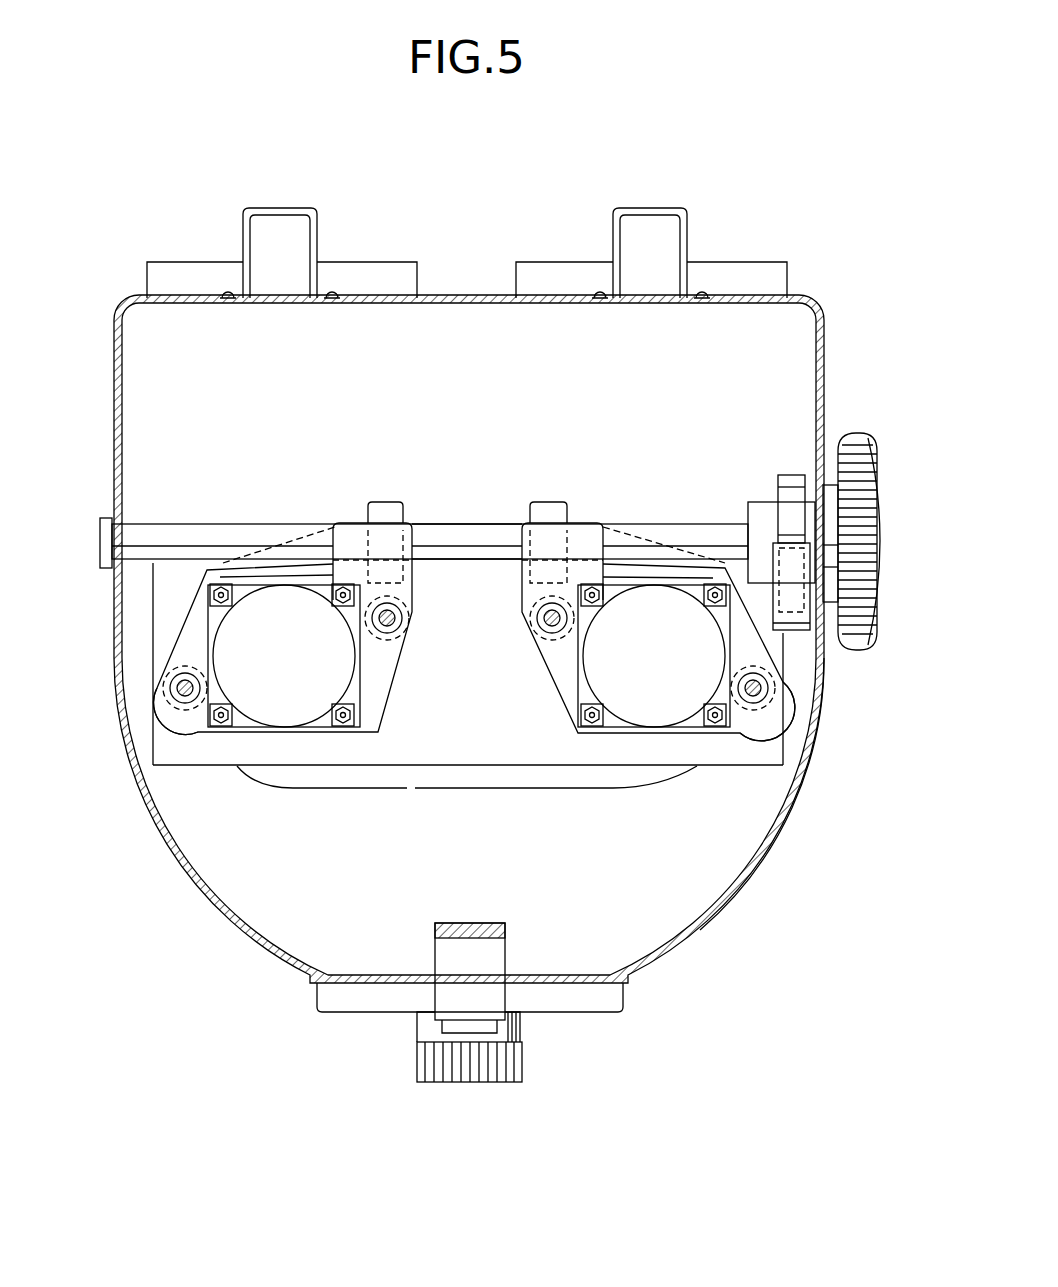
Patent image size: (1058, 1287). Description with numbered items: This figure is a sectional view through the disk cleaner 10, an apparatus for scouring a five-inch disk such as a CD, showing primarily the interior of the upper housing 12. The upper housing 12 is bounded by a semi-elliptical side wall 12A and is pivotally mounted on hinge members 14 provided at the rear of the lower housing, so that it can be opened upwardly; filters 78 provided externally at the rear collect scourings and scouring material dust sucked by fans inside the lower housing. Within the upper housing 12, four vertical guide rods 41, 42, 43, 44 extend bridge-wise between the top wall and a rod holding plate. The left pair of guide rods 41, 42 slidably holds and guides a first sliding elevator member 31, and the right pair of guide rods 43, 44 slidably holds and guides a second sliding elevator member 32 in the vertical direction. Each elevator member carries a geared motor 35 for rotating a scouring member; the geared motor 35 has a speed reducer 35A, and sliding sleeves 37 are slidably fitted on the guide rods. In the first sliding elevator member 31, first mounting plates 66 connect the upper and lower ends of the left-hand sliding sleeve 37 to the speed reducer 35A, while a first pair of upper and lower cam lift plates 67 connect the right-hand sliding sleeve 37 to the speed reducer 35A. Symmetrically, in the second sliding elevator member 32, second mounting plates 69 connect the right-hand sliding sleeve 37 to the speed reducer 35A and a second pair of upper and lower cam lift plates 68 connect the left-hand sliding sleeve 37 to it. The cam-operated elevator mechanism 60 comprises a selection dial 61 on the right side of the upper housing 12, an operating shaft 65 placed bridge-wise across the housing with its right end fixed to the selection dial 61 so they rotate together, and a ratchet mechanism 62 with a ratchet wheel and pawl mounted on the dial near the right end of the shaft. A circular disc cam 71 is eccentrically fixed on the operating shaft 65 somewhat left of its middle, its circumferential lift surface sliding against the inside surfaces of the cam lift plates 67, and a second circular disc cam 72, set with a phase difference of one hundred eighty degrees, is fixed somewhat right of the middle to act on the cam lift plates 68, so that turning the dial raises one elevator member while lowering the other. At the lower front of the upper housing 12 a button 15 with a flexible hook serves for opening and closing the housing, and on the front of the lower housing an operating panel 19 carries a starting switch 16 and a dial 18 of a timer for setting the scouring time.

The disk cleaner 10 is at (187, 190).
The upper housing 12 is at (713, 918).
The semi-elliptical side wall 12A is at (770, 853).
The hinge members 14 is at (300, 207).
The button 15 is at (492, 997).
The starting switch 16 is at (443, 1027).
The dial of a timer 18 is at (463, 1070).
The operating panel 19 is at (596, 1000).
The first sliding elevator member 31 is at (386, 698).
The second sliding elevator member 32 is at (553, 688).
The geared motor 35 is at (290, 712).
The speed reducer 35A is at (320, 728).
The sliding sleeves 37 is at (170, 670).
The guide rod 41 is at (172, 689).
The guide rod 42 is at (392, 616).
The guide rod 43 is at (552, 621).
The guide rod 44 is at (762, 688).
The cam-operated elevator mechanism 60 is at (681, 522).
The selection dial 61 is at (862, 471).
The ratchet mechanism 62 is at (781, 470).
The operating shaft 65 is at (455, 537).
The first mounting plates 66 is at (197, 724).
The first pair of upper and lower cam lift plates 67 is at (345, 548).
The second pair of upper and lower cam lift plates 68 is at (583, 532).
The second mounting plates 69 is at (738, 722).
The circular disc cam 71 is at (383, 503).
The circular disc cam 72 is at (545, 503).
The filters 78 is at (385, 272).